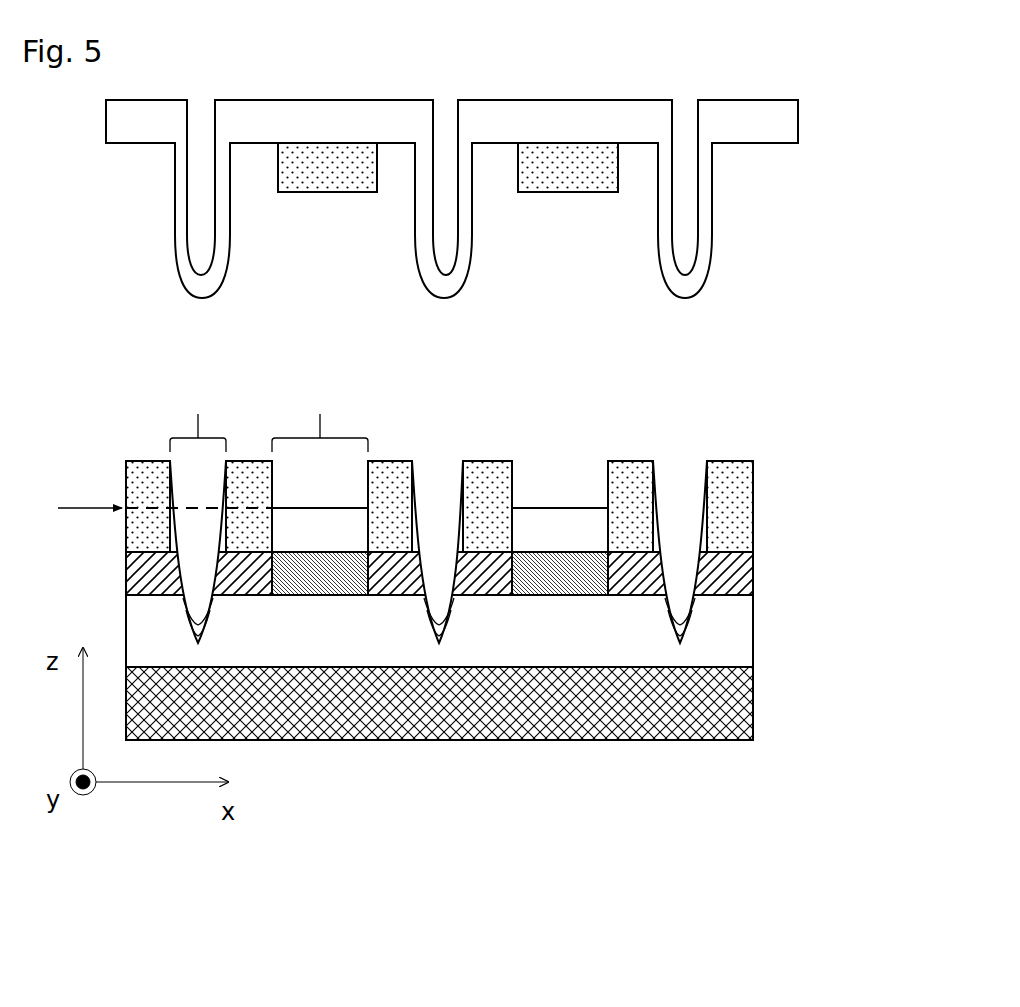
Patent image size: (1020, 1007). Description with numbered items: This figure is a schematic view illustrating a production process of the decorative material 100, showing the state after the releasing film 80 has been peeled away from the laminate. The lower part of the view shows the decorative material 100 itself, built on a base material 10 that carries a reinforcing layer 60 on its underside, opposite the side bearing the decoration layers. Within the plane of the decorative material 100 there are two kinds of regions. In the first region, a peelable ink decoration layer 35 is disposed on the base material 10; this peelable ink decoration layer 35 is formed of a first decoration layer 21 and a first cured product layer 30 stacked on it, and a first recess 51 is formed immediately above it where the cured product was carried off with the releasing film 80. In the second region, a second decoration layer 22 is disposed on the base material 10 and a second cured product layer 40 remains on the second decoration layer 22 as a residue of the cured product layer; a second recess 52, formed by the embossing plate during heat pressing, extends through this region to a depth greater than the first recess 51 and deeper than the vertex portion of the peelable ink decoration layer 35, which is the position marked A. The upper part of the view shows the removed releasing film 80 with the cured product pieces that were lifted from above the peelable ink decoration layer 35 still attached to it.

The releasing film 80 is at (773, 132).
The decorative material 100 is at (465, 577).
The first recess 51 is at (567, 470).
The second recess 52 is at (677, 467).
The second cured product layer 40 is at (743, 513).
The second decoration layer 22 is at (753, 565).
The base material 10 is at (743, 642).
The reinforcing layer 60 is at (753, 705).
The first cured product layer 30 is at (550, 528).
The first decoration layer 21 is at (587, 582).
The peelable ink decoration layer 35 is at (440, 691).